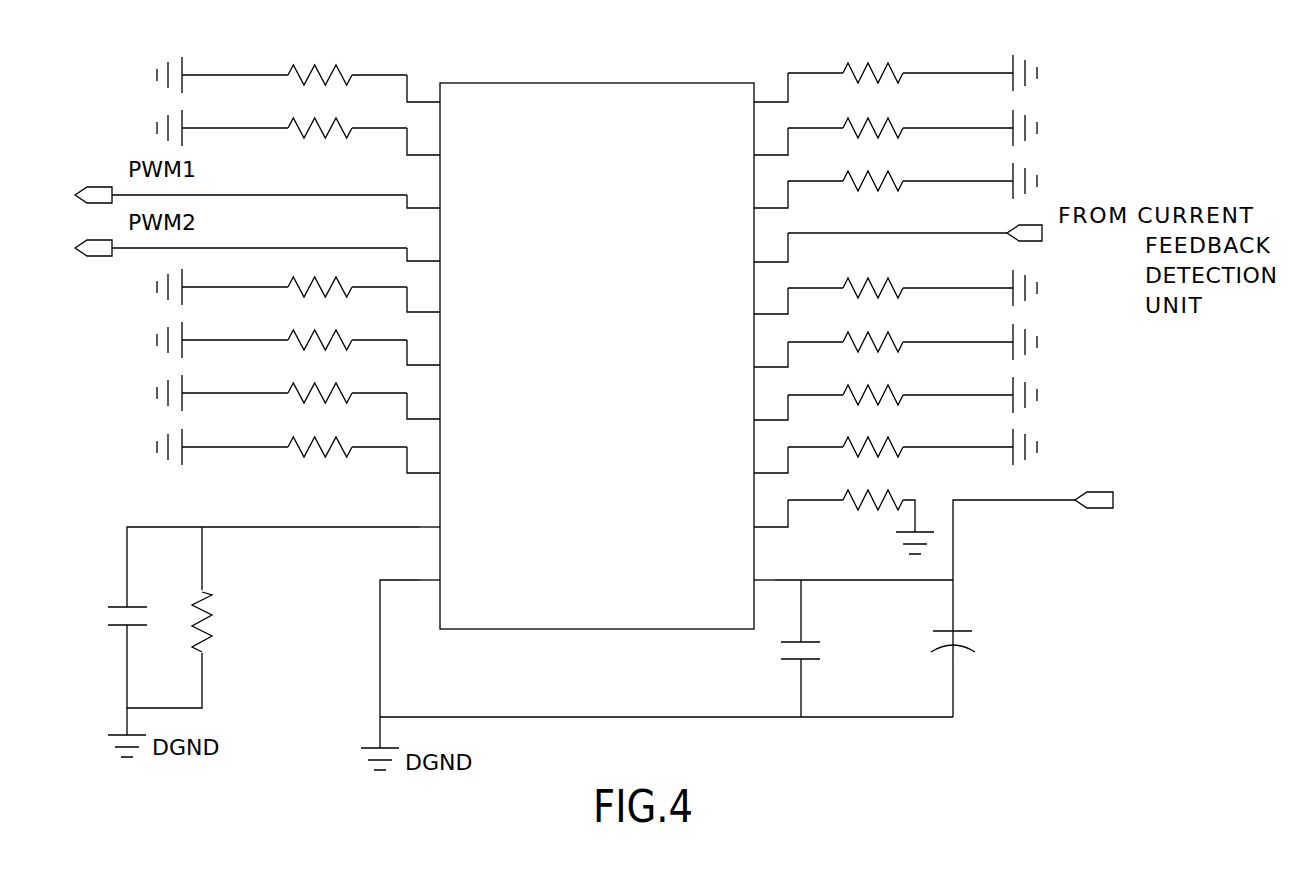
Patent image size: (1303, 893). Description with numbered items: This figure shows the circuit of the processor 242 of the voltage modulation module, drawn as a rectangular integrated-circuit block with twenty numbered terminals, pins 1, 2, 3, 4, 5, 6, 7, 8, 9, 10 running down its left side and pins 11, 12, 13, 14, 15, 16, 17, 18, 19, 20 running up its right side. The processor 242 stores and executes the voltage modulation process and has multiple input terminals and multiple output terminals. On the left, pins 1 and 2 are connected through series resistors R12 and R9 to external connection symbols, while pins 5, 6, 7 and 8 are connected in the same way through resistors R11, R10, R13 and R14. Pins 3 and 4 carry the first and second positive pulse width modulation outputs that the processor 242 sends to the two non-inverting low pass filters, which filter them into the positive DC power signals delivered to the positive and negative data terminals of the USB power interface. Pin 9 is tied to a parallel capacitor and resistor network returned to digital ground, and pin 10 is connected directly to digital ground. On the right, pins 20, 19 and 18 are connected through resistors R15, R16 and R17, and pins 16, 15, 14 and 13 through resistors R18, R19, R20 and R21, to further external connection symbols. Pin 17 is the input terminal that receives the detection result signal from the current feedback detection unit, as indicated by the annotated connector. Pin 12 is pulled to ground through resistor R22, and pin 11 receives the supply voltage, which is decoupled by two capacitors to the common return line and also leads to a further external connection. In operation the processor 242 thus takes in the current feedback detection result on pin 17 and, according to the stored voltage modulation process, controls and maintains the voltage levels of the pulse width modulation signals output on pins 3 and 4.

The processor 242 is at (600, 90).
The resistor R9 is at (282, 120).
The resistor R10 is at (282, 332).
The resistor R11 is at (282, 279).
The resistor R12 is at (282, 67).
The resistor R13 is at (282, 385).
The resistor R14 is at (282, 439).
The resistor R15 is at (912, 66).
The resistor R16 is at (912, 121).
The resistor R17 is at (912, 174).
The resistor R18 is at (912, 281).
The resistor R19 is at (912, 335).
The resistor R20 is at (912, 388).
The resistor R21 is at (912, 440).
The resistor R22 is at (869, 510).
The pin 1 of microcontroller 1 is at (423, 87).
The pin 2 of microcontroller 2 is at (423, 140).
The pin 3 of microcontroller 3 is at (423, 193).
The pin 4 of microcontroller 4 is at (423, 246).
The pin 5 of microcontroller 5 is at (423, 297).
The pin 6 of microcontroller 6 is at (423, 350).
The pin 7 of microcontroller 7 is at (423, 404).
The pin 8 of microcontroller 8 is at (423, 458).
The pin 9 of microcontroller 9 is at (429, 512).
The pin 10 of microcontroller 10 is at (422, 565).
The pin 11 (VDD) of microcontroller 11 is at (770, 565).
The pin 12 of microcontroller 12 is at (771, 512).
The pin 13 of microcontroller 13 is at (771, 458).
The pin 14 of microcontroller 14 is at (771, 405).
The pin 15 of microcontroller 15 is at (771, 352).
The pin 16 of microcontroller 16 is at (771, 299).
The pin 17 of microcontroller 17 is at (771, 247).
The pin 18 of microcontroller 18 is at (771, 193).
The pin 19 of microcontroller 19 is at (771, 140).
The pin 20 of microcontroller 20 is at (771, 87).